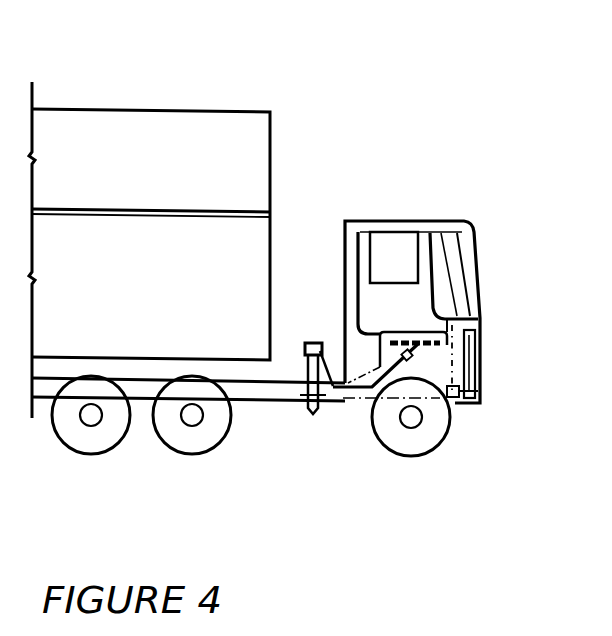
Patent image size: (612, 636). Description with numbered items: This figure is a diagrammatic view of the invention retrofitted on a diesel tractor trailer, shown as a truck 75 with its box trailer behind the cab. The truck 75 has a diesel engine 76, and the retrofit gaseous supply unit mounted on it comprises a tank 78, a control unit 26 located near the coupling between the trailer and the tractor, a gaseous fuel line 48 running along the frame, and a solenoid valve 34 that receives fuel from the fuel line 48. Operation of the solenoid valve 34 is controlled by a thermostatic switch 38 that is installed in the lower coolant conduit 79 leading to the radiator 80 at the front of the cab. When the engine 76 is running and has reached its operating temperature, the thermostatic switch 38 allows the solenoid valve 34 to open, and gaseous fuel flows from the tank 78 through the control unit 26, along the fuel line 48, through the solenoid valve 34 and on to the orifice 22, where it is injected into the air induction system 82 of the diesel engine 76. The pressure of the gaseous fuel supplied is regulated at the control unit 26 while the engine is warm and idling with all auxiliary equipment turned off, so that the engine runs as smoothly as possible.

The truck 75 is at (394, 178).
The air induction system 82 is at (446, 333).
The radiator 80 is at (480, 328).
The diesel engine 76 is at (440, 360).
The thermostatic switch 38 is at (460, 400).
The lower coolant conduit 79 is at (456, 405).
The orifice 22 is at (418, 348).
The solenoid valve 34 is at (409, 360).
The gaseous fuel line 48 is at (361, 398).
The tank 78 is at (312, 414).
The control unit 26 is at (306, 343).